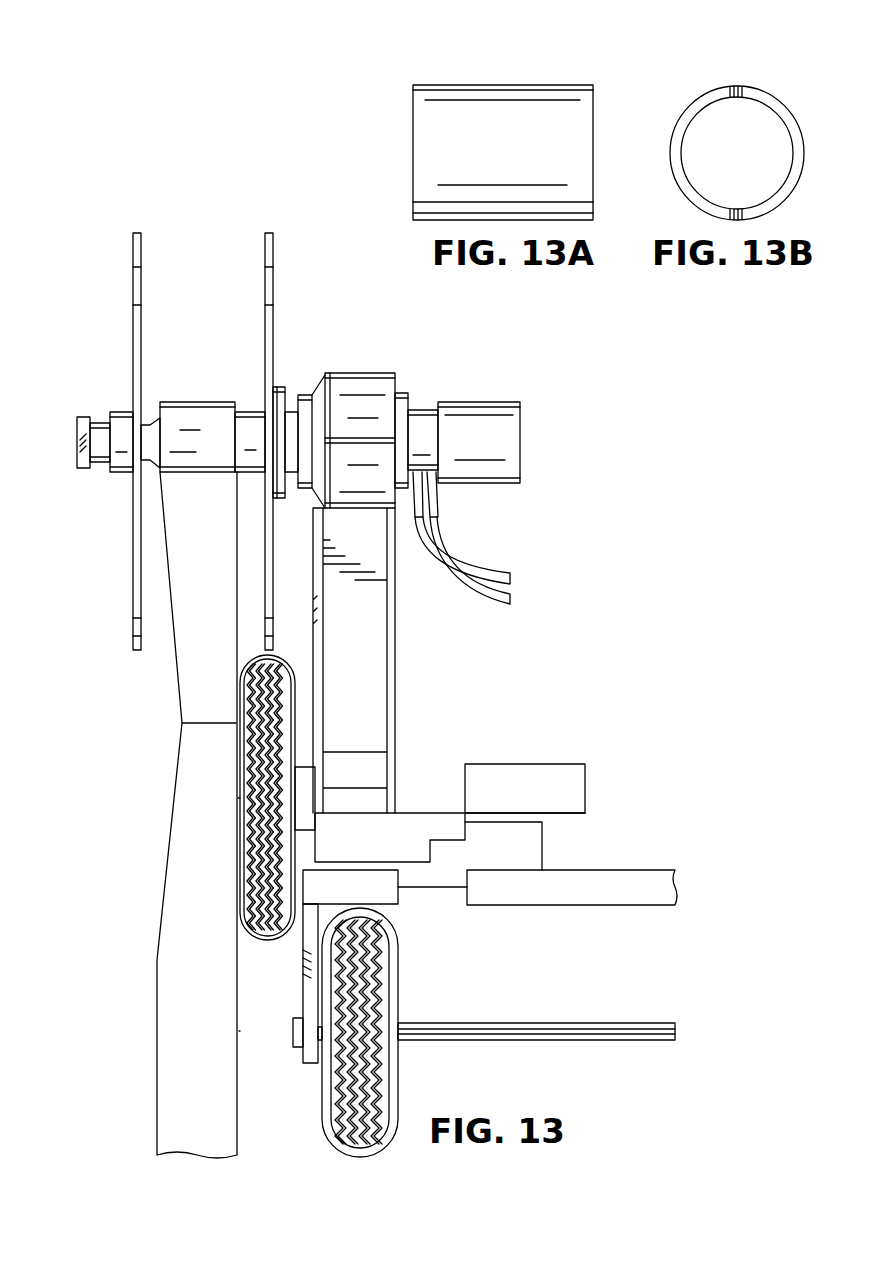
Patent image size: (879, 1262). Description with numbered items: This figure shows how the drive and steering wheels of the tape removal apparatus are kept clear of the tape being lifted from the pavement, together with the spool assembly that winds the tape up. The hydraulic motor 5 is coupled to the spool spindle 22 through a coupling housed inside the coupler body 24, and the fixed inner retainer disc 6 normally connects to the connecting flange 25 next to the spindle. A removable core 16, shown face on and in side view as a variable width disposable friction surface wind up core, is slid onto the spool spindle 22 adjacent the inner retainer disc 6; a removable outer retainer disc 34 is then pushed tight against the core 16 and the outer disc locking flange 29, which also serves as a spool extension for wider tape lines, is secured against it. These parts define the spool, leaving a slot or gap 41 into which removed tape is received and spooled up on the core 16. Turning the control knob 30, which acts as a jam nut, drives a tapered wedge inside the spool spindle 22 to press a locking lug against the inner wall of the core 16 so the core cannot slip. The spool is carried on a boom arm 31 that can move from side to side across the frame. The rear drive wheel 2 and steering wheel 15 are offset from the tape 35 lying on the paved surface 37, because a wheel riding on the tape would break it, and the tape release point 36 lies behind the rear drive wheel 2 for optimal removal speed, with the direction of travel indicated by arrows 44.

In FIG. 13, the rear drive wheel 2 is at (285, 710).
In FIG. 13, the hydraulic motor 5 is at (482, 412).
In FIG. 13, the inner retainer disc 6 is at (273, 293).
In FIG. 13, the steering wheel 15 is at (520, 1036).
In FIG. 13, the core 16 is at (202, 404).
In FIG. 13A, the core 16 is at (508, 85).
In FIG. 13B, the core 16 is at (738, 86).
In FIG. 13, the spool spindle 22 is at (245, 430).
In FIG. 13B, the spool spindle 22 is at (740, 157).
In FIG. 13, the coupler body 24 is at (360, 383).
In FIG. 13, the connecting flange 25 is at (279, 385).
In FIG. 13, the outer disc locking flange 29 is at (118, 412).
In FIG. 13, the control knob 30 is at (100, 435).
In FIG. 13, the boom arm 31 is at (358, 634).
In FIG. 13, the removable outer retainer disc 34 is at (133, 318).
In FIG. 13, the tape 35 is at (207, 753).
In FIG. 13, the tape release point 36 is at (182, 723).
In FIG. 13, the paved surface 37 is at (96, 1090).
In FIG. 13, the slot or gap 41 is at (190, 242).
In FIG. 13, the direction of movement 44 is at (238, 798).